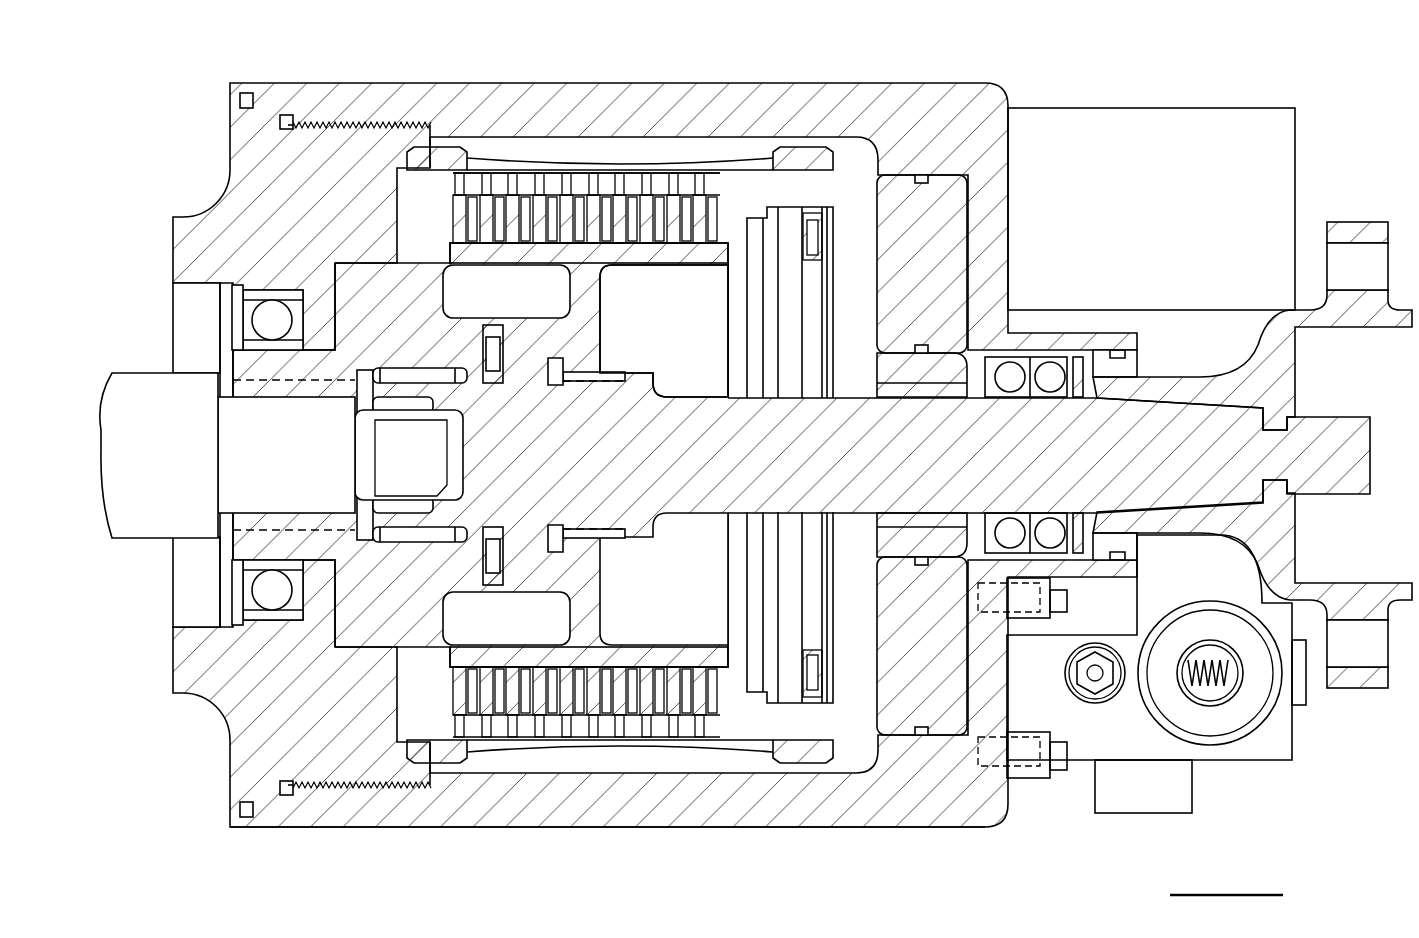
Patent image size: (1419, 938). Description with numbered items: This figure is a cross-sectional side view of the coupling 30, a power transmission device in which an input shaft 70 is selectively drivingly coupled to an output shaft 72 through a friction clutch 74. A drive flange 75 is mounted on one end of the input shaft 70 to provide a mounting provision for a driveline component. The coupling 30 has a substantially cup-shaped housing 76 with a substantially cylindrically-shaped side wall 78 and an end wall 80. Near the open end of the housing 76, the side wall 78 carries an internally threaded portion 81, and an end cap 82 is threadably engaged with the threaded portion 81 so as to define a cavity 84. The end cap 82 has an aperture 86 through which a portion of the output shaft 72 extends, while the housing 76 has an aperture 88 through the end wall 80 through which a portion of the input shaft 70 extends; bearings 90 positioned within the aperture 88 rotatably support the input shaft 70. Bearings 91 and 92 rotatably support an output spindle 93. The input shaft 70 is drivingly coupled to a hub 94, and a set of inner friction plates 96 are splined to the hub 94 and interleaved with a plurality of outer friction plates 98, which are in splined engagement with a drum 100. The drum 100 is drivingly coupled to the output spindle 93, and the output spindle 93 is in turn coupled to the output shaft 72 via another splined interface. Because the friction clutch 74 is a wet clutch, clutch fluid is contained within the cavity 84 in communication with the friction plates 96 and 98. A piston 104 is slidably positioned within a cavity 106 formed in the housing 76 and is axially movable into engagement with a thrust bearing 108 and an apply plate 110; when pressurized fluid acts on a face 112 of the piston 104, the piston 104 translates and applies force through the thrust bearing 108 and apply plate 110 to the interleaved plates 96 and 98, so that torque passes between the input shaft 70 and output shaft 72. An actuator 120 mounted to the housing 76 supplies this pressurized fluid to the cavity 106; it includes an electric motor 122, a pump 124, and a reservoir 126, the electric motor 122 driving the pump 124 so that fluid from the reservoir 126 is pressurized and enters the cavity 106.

The coupling 30 is at (844, 62).
The input shaft 70 is at (1218, 415).
The output shaft 72 is at (140, 388).
The friction clutch 74 is at (620, 137).
The drive flange 75 is at (1345, 690).
The housing 76 is at (948, 822).
The side wall 78 is at (497, 825).
The end wall 80 is at (1000, 228).
The internally threaded portion 81 is at (330, 780).
The end cap 82 is at (245, 165).
The cavity 84 is at (612, 150).
The aperture 86 is at (197, 290).
The aperture 88 is at (1130, 356).
The bearings 90 is at (1050, 355).
The bearing 91 is at (250, 600).
The bearing 92 is at (428, 538).
The output spindle 93 is at (410, 290).
The hub 94 is at (598, 320).
The inner friction plates 96 is at (710, 245).
The outer friction plates 98 is at (700, 175).
The drum 100 is at (565, 157).
The piston 104 is at (940, 680).
The cavity 106 is at (962, 195).
The thrust bearing 108 is at (815, 675).
The apply plate 110 is at (735, 735).
The face 112 is at (958, 595).
The actuator 120 is at (1163, 683).
The electric motor 122 is at (1290, 158).
The pump 124 is at (1222, 760).
The reservoir 126 is at (1175, 620).